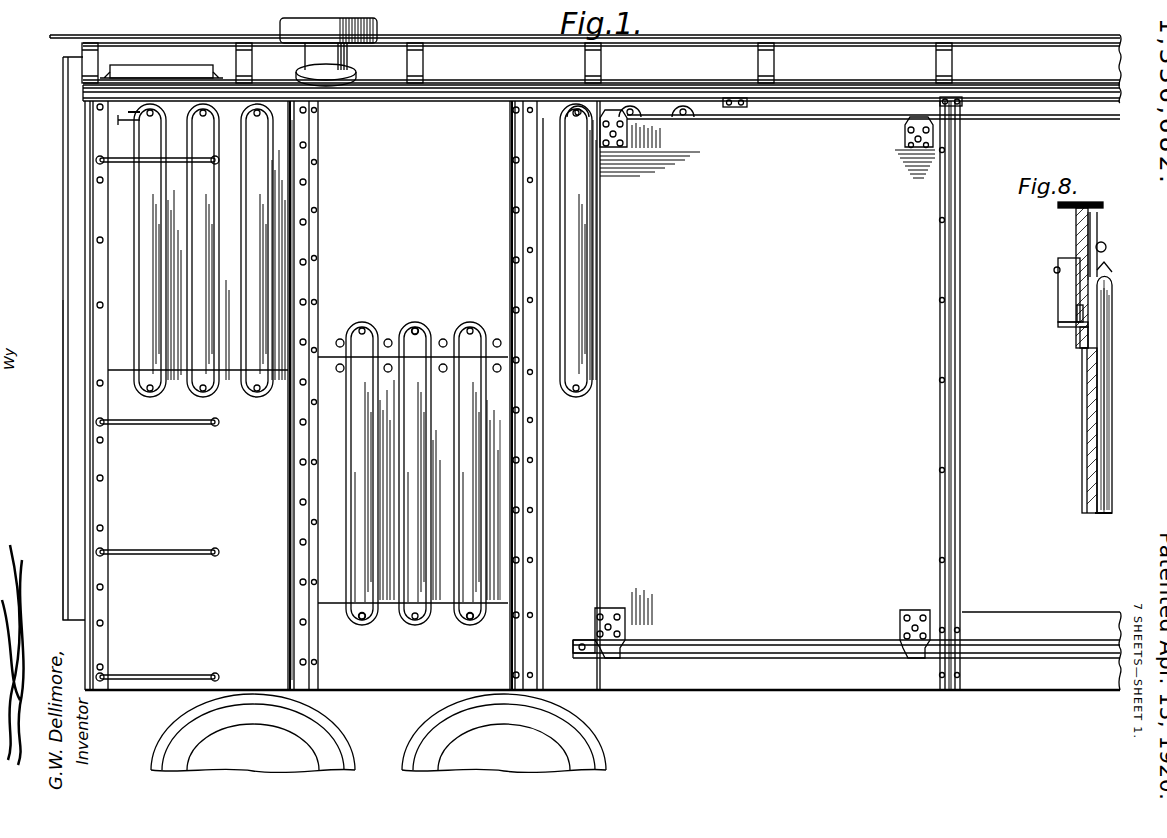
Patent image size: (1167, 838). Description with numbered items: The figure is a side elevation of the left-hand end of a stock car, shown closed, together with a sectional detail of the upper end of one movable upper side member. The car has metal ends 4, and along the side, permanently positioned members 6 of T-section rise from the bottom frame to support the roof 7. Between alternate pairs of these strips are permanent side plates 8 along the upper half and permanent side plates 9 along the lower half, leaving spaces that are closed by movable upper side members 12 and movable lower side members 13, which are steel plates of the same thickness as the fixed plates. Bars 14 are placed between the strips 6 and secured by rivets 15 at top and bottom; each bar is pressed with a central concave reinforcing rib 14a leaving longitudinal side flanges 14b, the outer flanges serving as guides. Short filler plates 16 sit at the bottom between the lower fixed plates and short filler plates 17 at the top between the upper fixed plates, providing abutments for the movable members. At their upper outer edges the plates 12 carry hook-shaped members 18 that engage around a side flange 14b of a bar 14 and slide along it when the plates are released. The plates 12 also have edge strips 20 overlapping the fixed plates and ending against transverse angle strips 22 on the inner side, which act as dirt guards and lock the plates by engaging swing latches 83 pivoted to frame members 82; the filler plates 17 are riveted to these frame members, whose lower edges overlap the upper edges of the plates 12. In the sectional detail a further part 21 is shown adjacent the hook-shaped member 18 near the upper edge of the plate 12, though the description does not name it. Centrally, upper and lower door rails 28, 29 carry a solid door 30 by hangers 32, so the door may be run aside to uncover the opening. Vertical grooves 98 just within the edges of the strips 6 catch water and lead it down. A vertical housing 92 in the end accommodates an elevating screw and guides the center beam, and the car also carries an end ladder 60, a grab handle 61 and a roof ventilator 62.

In FIG. 1, the end 4 is at (90, 347).
In FIG. 1, the permanently positioned member 6 is at (308, 600).
In FIG. 1, the roof 7 is at (585, 69).
In FIG. 1, the permanent side plate 8 is at (418, 179).
In FIG. 1, the permanent side plate 9 is at (196, 469).
In FIG. 1, the movable upper side member 12 is at (285, 190).
In FIG. 8, the movable upper side member 12 is at (1090, 392).
In FIG. 1, the movable lower side member 13 is at (495, 453).
In FIG. 8, the movable lower side member 13 is at (1110, 300).
In FIG. 1, the bar 14 is at (140, 217).
In FIG. 8, the bar 14 is at (1107, 352).
In FIG. 1, the central concave reinforcing rib 14a is at (256, 228).
In FIG. 1, the longitudinal side flange 14b is at (350, 570).
In FIG. 1, the rivet 15 is at (427, 328).
In FIG. 8, the rivet 15 is at (1104, 256).
In FIG. 1, the short filler plate 16 is at (466, 626).
In FIG. 1, the short filler plate 17 is at (180, 110).
In FIG. 8, the short filler plate 17 is at (1095, 236).
In FIG. 1, the hook-shaped member 18 is at (130, 113).
In FIG. 8, the edge strip 20 is at (1082, 438).
In FIG. 8, the roller 21 is at (1106, 276).
In FIG. 8, the transverse angle strip 22 is at (1080, 340).
In FIG. 1, the upper door rail 28 is at (777, 119).
In FIG. 1, the lower door rail 29 is at (1000, 642).
In FIG. 1, the solid door 30 is at (701, 541).
In FIG. 1, the hanger 32 is at (632, 140).
In FIG. 1, the end ladder 60 is at (162, 543).
In FIG. 1, the grab handle 61 is at (150, 63).
In FIG. 1, the roof ventilator 62 is at (328, 52).
In FIG. 8, the frame member 82 is at (1074, 238).
In FIG. 8, the swing latch 83 is at (1060, 293).
In FIG. 1, the vertical housing 92 is at (73, 463).
In FIG. 1, the vertical groove 98 is at (300, 275).